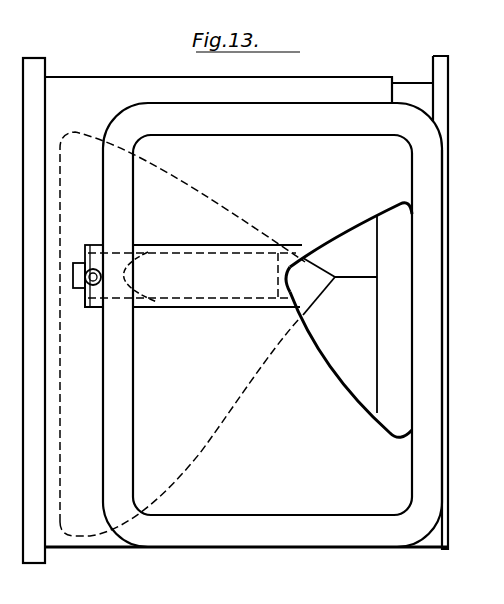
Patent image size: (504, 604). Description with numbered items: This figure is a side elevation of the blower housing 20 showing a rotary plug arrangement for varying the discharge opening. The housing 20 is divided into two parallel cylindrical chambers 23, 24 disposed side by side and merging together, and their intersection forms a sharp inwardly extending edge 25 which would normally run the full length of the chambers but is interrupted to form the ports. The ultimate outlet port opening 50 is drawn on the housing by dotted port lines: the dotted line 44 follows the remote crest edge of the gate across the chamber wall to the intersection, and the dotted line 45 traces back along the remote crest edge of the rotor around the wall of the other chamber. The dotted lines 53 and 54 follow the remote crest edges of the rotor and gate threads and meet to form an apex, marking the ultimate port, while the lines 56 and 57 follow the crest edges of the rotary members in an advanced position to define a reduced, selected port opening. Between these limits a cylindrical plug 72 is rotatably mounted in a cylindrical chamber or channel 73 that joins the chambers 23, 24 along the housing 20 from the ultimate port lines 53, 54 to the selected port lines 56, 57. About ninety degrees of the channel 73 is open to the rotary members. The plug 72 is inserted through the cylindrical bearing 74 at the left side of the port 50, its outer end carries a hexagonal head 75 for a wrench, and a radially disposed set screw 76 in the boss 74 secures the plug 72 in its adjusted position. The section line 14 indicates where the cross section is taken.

The housing 20 is at (90, 109).
The ultimate outlet port opening 50 is at (304, 484).
The section line 14 is at (211, 157).
The dotted line 44 is at (182, 182).
The dotted line 45 is at (303, 316).
The plug 72 is at (227, 282).
The cylindrical chamber or channel 73 is at (212, 247).
The dotted line 53 is at (155, 300).
The dotted line 54 is at (150, 253).
The cylindrical bearing 74 is at (92, 250).
The hexagonal head 75 is at (77, 289).
The set screw 76 is at (91, 304).
The dotted line 57 is at (345, 224).
The dotted line 56 is at (333, 367).
The cylindrical chamber 23 is at (337, 253).
The cylindrical chamber 24 is at (332, 319).
The inwardly extending edge 25 is at (367, 271).